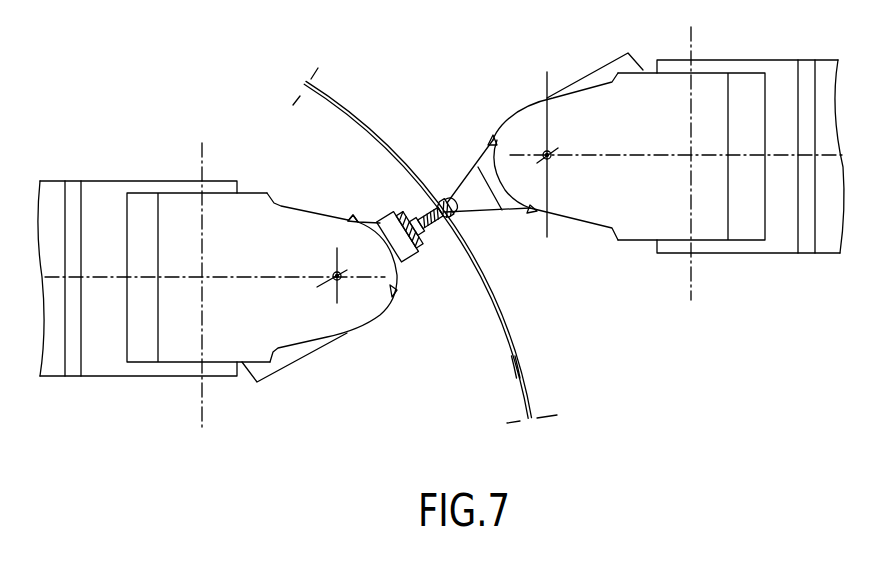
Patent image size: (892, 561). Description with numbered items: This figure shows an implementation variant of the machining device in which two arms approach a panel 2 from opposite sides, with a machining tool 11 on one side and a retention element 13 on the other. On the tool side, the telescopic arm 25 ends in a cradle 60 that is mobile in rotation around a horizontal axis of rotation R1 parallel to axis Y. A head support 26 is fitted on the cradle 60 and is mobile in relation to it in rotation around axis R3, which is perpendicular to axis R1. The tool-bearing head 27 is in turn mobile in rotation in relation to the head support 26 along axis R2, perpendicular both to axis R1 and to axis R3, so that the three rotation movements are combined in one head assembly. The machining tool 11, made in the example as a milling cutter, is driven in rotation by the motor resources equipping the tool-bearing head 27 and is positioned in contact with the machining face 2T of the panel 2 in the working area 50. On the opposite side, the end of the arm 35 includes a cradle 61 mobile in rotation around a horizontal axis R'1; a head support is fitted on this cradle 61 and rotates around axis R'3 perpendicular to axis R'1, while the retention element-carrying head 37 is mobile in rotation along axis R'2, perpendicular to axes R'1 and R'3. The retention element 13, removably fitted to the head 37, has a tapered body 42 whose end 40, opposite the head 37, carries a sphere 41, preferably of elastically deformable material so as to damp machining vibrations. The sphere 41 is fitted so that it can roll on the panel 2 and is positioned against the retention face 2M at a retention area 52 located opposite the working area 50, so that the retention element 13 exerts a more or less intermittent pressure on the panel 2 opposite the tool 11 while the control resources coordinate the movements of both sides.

The panel 2 is at (533, 392).
The retention face 2M is at (528, 365).
The machining face 2T is at (504, 365).
The machining tool 11 is at (420, 252).
The retention element 13 is at (482, 214).
The telescopic arm 25 is at (58, 370).
The head support 26 is at (282, 210).
The tool-bearing head 27 is at (290, 353).
The arm 35 is at (825, 72).
The retention element-carrying head 37 is at (607, 72).
The end 40 is at (440, 195).
The sphere 41 is at (420, 212).
The body 42 is at (452, 195).
The working area 50 is at (440, 222).
The retention area 52 is at (464, 222).
The cradle 60 is at (113, 364).
The cradle 61 is at (668, 67).
The axis of rotation R1 is at (100, 277).
The axis of rotation R2 is at (334, 274).
The axis of rotation R3 is at (203, 153).
The axis of rotation R'1 is at (684, 176).
The axis of rotation R'2 is at (572, 154).
The axis of rotation R'3 is at (719, 161).